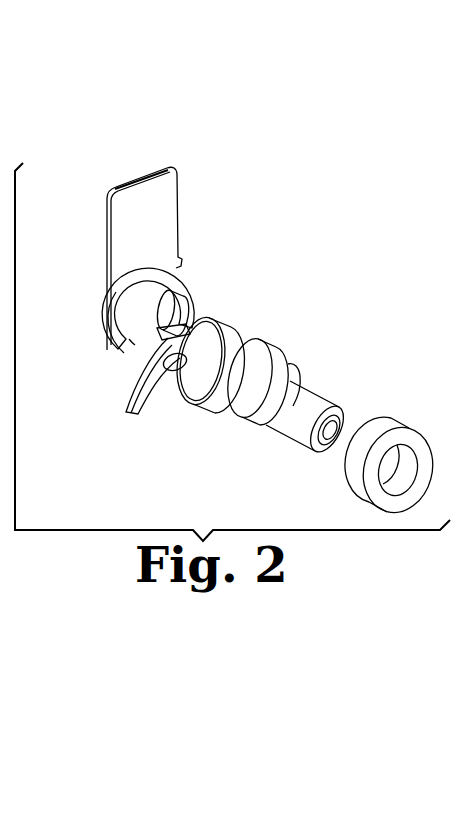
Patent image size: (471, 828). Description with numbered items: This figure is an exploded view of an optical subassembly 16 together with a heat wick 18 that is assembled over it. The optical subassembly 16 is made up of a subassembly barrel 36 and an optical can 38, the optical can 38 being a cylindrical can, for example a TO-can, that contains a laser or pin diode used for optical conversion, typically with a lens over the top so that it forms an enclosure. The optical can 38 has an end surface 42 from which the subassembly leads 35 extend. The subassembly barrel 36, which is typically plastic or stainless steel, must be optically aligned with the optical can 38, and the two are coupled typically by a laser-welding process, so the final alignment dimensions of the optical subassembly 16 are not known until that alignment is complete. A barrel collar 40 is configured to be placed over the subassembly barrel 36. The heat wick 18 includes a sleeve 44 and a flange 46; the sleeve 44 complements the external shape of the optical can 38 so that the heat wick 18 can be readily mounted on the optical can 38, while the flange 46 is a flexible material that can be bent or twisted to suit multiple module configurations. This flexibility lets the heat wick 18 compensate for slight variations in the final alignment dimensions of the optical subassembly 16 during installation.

The optical subassembly 16 is at (253, 378).
The heat wick 18 is at (115, 290).
The subassembly leads 35 is at (130, 410).
The subassembly barrel 36 is at (290, 425).
The optical can 38 is at (250, 338).
The barrel collar 40 is at (404, 430).
The end surface 42 is at (206, 320).
The sleeve 44 is at (105, 350).
The flange 46 is at (110, 218).